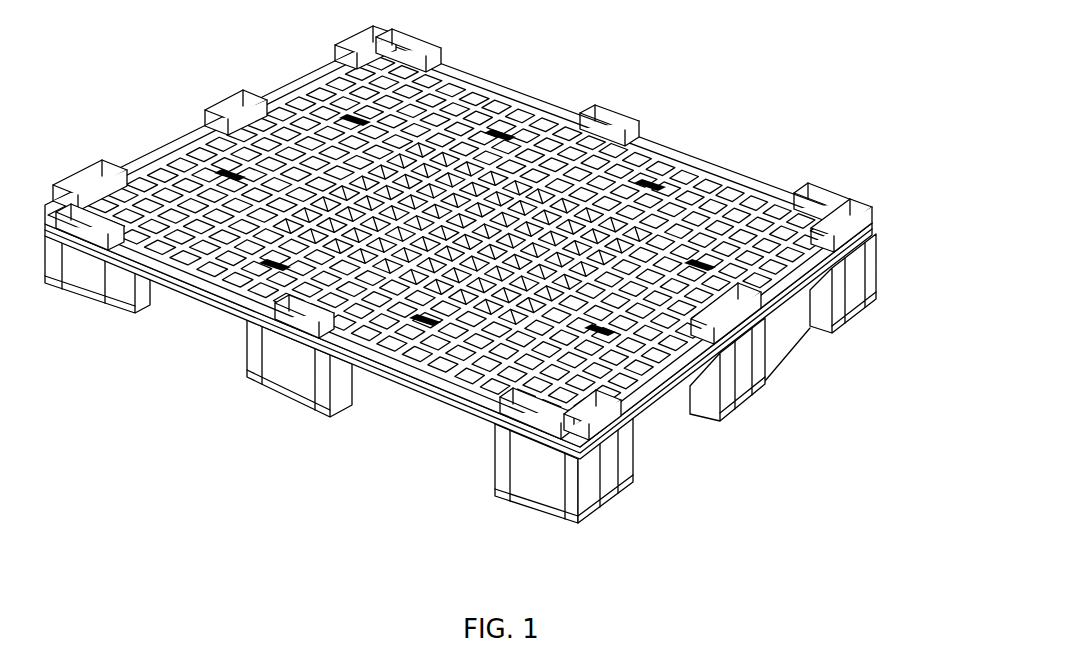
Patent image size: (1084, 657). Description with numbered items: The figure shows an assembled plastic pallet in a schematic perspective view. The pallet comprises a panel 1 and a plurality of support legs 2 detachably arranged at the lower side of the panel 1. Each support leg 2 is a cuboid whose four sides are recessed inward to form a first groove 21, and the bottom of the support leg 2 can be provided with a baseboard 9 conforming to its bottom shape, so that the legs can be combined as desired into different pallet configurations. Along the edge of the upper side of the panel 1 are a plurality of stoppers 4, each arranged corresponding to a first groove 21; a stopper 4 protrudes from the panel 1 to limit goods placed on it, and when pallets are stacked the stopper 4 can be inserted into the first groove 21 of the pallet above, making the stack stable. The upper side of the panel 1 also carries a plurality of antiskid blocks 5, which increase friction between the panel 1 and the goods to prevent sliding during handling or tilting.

The panel 1 is at (478, 76).
The support leg 2 is at (460, 414).
The stopper 4 is at (833, 202).
The antiskid block 5 is at (648, 173).
The baseboard 9 is at (607, 490).
The first groove 21 is at (530, 470).